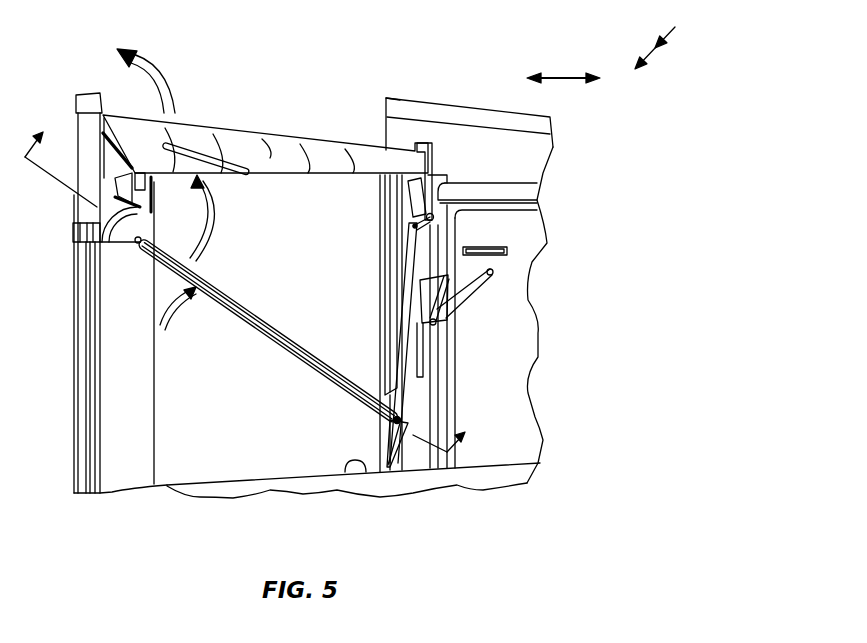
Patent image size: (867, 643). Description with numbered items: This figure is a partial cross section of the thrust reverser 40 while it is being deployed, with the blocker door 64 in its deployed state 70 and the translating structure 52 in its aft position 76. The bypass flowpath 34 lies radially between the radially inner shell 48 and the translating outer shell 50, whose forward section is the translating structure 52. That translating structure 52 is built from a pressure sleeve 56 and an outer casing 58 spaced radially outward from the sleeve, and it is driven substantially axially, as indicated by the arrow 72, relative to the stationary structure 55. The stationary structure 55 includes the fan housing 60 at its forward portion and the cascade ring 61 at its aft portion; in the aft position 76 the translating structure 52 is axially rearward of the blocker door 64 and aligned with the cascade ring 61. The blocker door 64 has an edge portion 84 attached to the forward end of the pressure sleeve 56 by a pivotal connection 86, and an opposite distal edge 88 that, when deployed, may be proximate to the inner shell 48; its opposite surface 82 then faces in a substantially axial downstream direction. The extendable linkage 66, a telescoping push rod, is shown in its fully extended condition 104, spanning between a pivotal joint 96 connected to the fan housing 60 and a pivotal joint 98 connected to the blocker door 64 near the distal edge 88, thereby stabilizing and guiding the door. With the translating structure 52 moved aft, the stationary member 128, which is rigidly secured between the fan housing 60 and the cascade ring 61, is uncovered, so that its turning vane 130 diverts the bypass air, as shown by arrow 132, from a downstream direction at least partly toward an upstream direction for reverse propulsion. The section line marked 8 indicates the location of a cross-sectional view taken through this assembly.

The section line 8- 8 is at (252, 280).
The bypass flowpath 34 is at (295, 456).
The thrust reverser 40 is at (668, 36).
The radially inner shell 48 is at (350, 472).
The translating outer shell 50 is at (622, 142).
The translating structure 52 is at (562, 174).
The stationary structure 55 is at (77, 502).
The pressure sleeve 56 is at (500, 180).
The outer casing 58 is at (438, 100).
The fan housing 60 is at (118, 478).
The cascade ring 61 is at (383, 333).
The blocker door 64 is at (405, 298).
The extendable linkage 66 is at (225, 330).
The deployed state 70 is at (370, 245).
The axial direction arrow 72 is at (565, 78).
The aft position 76 is at (375, 88).
The opposite surface 82 is at (423, 348).
The edge portion 84 is at (403, 202).
The pivotal connection 86 is at (438, 216).
The distal edge 88 is at (405, 470).
The pivotal joint 96 is at (142, 247).
The pivotal joint 98 is at (393, 420).
The fully extended condition 104 is at (245, 288).
The stationary member 128 is at (195, 108).
The turning vane 130 is at (273, 140).
The diverted airflow arrow 132 is at (153, 73).